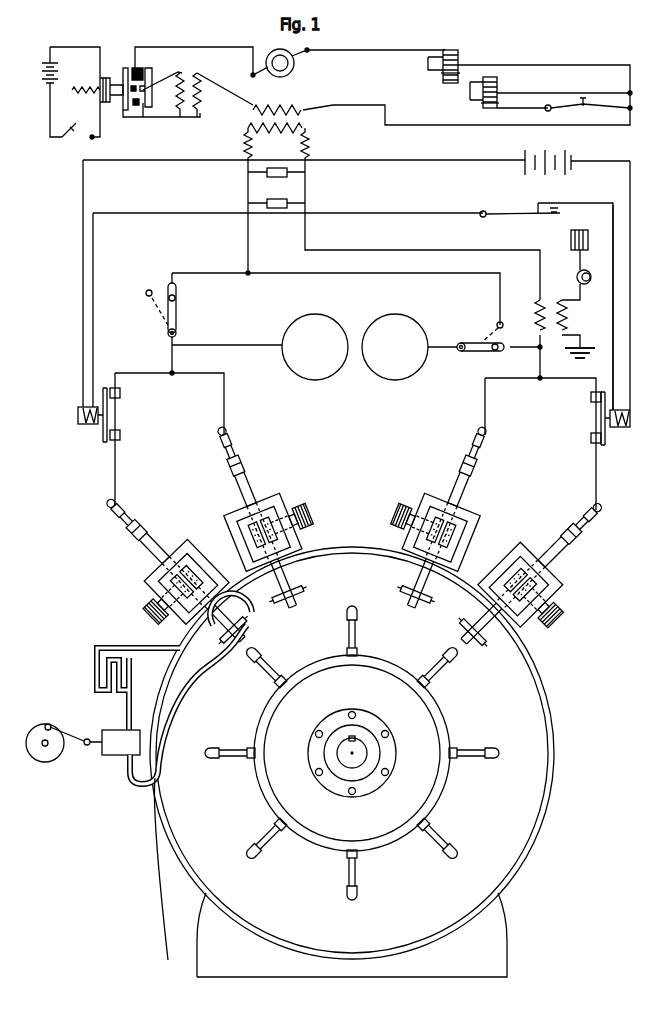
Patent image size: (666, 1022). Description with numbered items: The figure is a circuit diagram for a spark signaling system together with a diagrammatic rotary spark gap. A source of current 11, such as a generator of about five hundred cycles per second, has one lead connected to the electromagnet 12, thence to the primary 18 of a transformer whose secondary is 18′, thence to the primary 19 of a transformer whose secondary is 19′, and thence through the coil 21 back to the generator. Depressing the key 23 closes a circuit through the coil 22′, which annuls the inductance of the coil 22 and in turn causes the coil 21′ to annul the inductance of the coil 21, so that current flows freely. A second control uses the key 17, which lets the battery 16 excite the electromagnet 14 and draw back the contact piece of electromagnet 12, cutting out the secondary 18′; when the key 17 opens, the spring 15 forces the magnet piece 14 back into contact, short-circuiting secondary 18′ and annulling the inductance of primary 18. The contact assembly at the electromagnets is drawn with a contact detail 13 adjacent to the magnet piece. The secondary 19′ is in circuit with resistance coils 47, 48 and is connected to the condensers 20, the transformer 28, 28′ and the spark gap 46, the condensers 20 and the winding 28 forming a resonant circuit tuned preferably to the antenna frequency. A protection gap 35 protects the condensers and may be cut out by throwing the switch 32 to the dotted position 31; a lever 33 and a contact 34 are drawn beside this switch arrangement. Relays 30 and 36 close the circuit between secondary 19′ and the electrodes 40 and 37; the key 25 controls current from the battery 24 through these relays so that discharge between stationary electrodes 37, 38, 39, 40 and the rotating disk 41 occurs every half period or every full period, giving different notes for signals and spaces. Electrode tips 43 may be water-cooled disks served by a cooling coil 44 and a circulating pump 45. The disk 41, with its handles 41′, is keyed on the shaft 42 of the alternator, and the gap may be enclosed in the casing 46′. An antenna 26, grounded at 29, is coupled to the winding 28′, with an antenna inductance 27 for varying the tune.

The source of current 11 is at (266, 50).
The electromagnet 12 is at (147, 83).
The contact 13 is at (133, 80).
The electromagnet 14 is at (125, 72).
The spring 15 is at (82, 82).
The battery 16 is at (43, 73).
The key 17 is at (64, 135).
The primary of transformer 18 is at (212, 95).
The secondary of transformer 18' is at (167, 110).
The primary of transformer 19 is at (283, 96).
The secondary of transformer 19' is at (299, 128).
The condensers 20 is at (290, 200).
The coil 21 is at (463, 53).
The coil 21' is at (430, 81).
The coil 22 is at (506, 72).
The coil 22' is at (471, 112).
The key 23 is at (583, 98).
The battery 24 is at (573, 157).
The key 25 is at (515, 213).
The antenna 26 is at (588, 238).
The antenna inductance 27 is at (592, 275).
The primary of transformer 28 is at (529, 311).
The secondary of transformer 28' is at (608, 315).
The ground 29 is at (595, 352).
The relay 30 is at (633, 420).
The dotted-line position of switch 31 is at (481, 333).
The switch 32 is at (481, 355).
The lever 33 is at (177, 308).
The contact 34 is at (160, 313).
The protection gap 35 is at (355, 360).
The relay 36 is at (75, 415).
The stationary electrode 37 is at (148, 549).
The stationary electrode 38 is at (245, 495).
The stationary electrode 39 is at (460, 500).
The stationary electrode 40 is at (548, 555).
The rotating disk 41 is at (352, 733).
The handle 41' is at (336, 883).
The shaft 42 is at (352, 753).
The electrode tips 43 is at (246, 645).
The cooling coil 44 is at (118, 689).
The circulating pump 45 is at (83, 752).
The spark gap 46 is at (352, 762).
The casing 46' is at (369, 753).
The resistance coil 47 is at (312, 147).
The resistance coil 48 is at (244, 147).